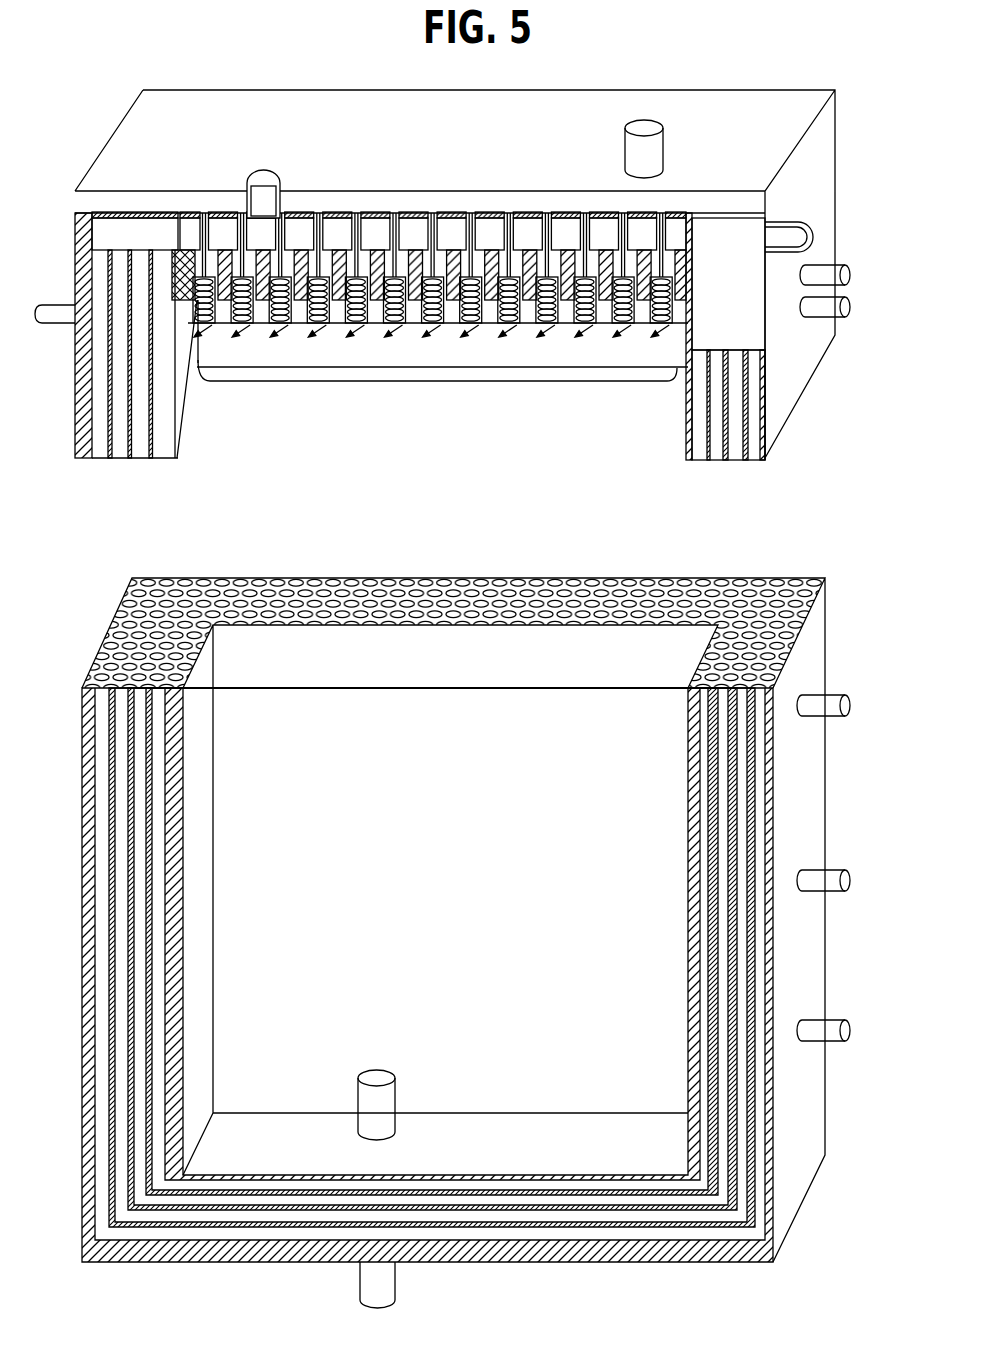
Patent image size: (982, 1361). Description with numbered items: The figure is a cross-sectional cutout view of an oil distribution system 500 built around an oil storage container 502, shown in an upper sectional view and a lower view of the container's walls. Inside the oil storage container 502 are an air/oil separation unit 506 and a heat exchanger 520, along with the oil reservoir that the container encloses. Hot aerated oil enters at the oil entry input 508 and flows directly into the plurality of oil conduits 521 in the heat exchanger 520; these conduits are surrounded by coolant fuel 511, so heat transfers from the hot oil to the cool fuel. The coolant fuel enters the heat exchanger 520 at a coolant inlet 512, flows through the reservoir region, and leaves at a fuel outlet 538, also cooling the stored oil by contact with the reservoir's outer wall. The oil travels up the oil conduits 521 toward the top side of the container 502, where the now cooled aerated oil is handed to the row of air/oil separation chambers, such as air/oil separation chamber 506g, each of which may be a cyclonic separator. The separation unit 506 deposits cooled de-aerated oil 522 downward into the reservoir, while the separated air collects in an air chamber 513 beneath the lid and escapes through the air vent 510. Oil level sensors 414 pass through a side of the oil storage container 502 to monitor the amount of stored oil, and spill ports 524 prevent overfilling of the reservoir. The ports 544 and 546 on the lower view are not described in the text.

The oil distribution system 500 is at (252, 44).
The oil storage container 502 is at (435, 175).
The air/oil separation unit 506 is at (434, 381).
The air/oil separation chamber 506g is at (667, 327).
The oil entry input 508 is at (787, 236).
The air vent 510 is at (643, 128).
The coolant fuel 511 is at (172, 462).
The coolant inlet 512 is at (270, 173).
The air chamber 513 is at (133, 200).
The heat exchanger 520 is at (169, 371).
The oil conduits 521 is at (157, 925).
The cooled de-aerated oil 522 is at (607, 330).
The spill ports 524 is at (850, 307).
The fuel outlet 538 is at (48, 308).
The oil level sensors 414 is at (848, 700).
The pedestal 544 is at (392, 1097).
The exhaust port 546 is at (390, 1277).